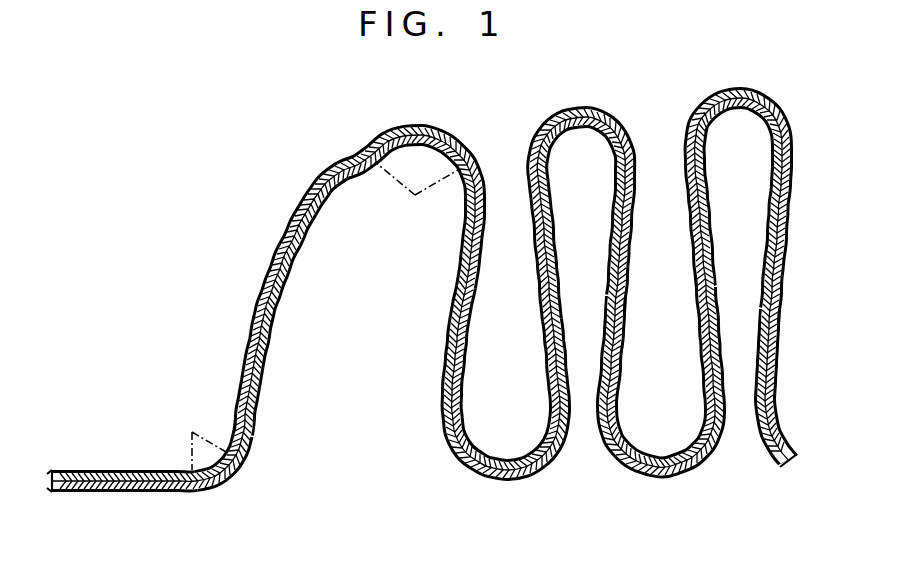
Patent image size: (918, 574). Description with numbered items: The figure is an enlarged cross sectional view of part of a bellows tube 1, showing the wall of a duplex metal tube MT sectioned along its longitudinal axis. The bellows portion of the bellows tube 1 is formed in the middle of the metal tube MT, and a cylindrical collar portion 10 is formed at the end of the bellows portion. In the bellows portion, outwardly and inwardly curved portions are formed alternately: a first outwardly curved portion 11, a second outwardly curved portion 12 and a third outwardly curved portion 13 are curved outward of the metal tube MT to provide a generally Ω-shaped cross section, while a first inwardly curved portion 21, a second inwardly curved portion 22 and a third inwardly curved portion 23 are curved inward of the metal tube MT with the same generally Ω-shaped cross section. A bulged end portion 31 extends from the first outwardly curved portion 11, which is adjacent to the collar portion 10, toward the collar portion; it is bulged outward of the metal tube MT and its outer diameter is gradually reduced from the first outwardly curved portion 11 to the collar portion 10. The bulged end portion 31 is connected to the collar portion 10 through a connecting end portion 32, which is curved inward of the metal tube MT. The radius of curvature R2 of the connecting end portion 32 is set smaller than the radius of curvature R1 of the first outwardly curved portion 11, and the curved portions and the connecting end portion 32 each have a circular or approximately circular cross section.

The bellows tube 1 is at (426, 307).
The collar portion 10 is at (133, 492).
The first outwardly curved portion 11 is at (421, 124).
The second outwardly curved portion 12 is at (584, 106).
The third outwardly curved portion 13 is at (736, 89).
The first inwardly curved portion 21 is at (497, 481).
The second inwardly curved portion 22 is at (665, 479).
The third inwardly curved portion 23 is at (779, 468).
The bulged end portion 31 is at (268, 277).
The connecting end portion 32 is at (231, 477).
The radius of curvature of the first outwardly curved portion R1 is at (414, 196).
The radius of curvature of the connecting end portion R2 is at (191, 432).
The duplex metal tube MT is at (72, 462).